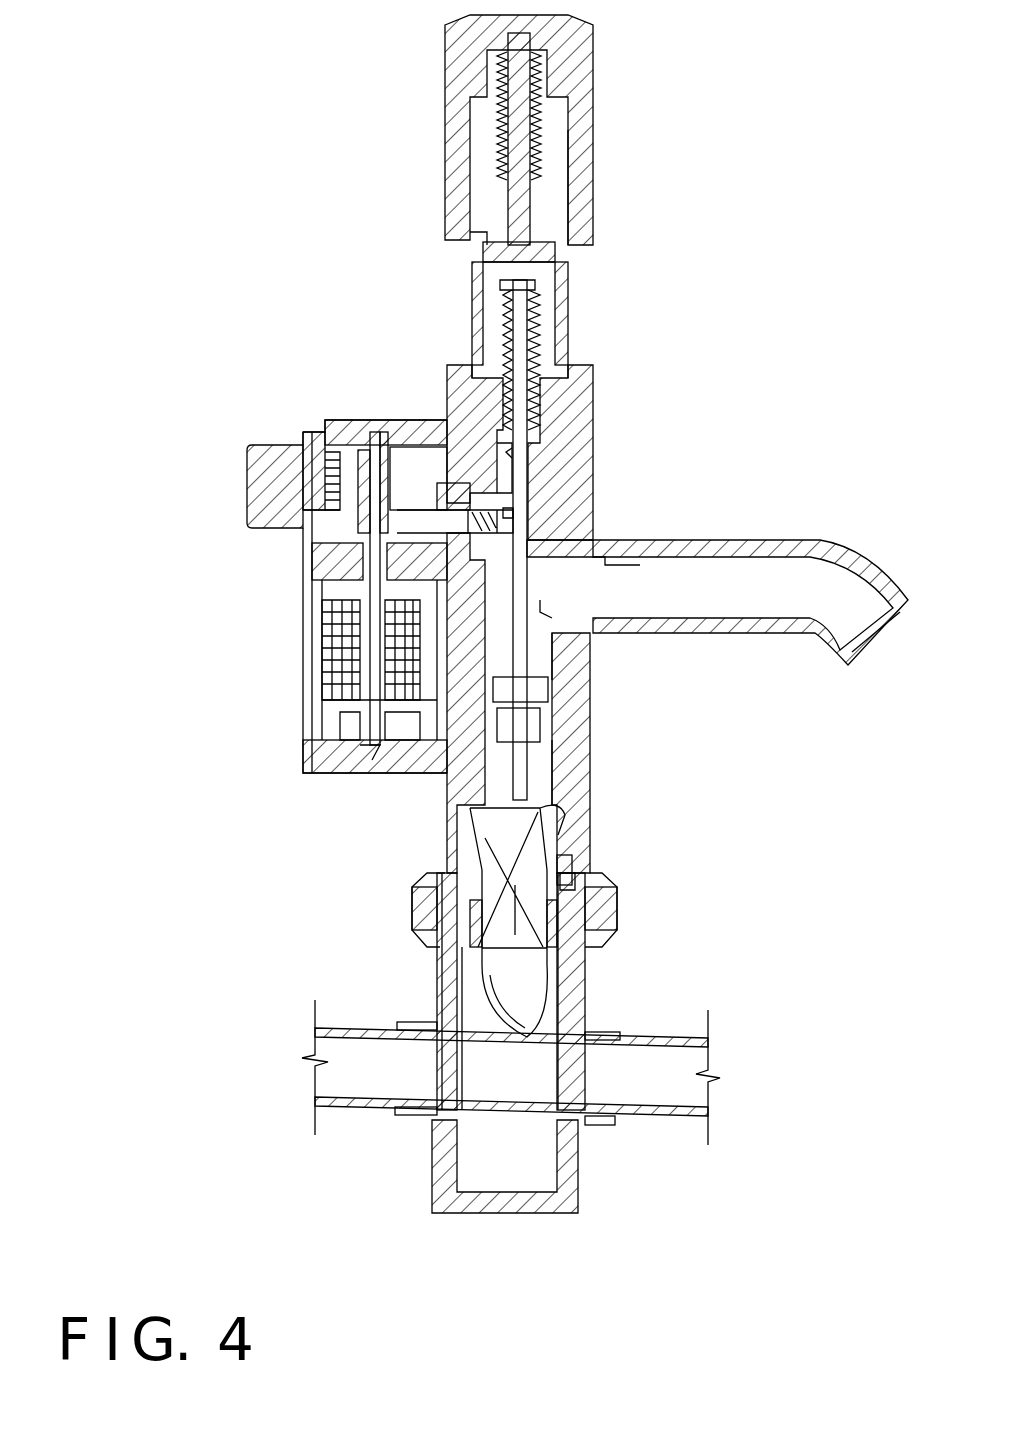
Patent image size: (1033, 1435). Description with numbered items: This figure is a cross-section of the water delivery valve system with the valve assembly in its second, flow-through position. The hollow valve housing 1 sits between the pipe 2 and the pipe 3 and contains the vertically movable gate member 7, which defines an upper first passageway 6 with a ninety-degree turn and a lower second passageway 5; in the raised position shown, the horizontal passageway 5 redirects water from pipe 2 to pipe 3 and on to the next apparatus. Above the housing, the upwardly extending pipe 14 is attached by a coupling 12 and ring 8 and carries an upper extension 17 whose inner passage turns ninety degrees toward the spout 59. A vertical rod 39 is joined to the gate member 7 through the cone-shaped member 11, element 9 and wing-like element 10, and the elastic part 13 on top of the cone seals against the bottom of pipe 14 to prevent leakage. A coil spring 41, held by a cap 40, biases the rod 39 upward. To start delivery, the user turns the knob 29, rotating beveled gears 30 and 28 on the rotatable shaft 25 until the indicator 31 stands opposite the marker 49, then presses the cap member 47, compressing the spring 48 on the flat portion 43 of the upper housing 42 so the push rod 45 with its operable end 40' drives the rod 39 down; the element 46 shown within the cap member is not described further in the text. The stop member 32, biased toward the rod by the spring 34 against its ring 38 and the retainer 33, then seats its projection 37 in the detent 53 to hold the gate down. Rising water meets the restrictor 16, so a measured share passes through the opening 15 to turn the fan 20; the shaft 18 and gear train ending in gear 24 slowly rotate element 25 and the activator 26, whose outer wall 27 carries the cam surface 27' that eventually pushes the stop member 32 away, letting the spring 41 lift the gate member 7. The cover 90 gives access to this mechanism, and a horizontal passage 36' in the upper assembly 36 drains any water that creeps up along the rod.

The valve housing 1 is at (578, 1165).
The pipe 2 is at (705, 1125).
The pipe 3 is at (355, 1110).
The second passageway 5 is at (560, 1050).
The first passageway 6 is at (552, 985).
The gate member 7 is at (445, 975).
The ring 8 is at (600, 930).
The element 9 is at (580, 900).
The wing-like element 10 is at (565, 860).
The cone-shaped member 11 is at (552, 840).
The coupling 12 is at (468, 830).
The elastic part 13 is at (552, 810).
The upwardly extending pipe 14 is at (552, 770).
The opening 15 is at (540, 725).
The restrictor 16 is at (548, 690).
The upper extension 17 is at (555, 658).
The shaft 18 is at (362, 752).
The fan 20 is at (335, 742).
The gear 24 is at (340, 610).
The rotatable shaft 25 is at (370, 570).
The activator 26 is at (380, 535).
The outer wall 27 is at (305, 554).
The cam surface 27' is at (455, 545).
The beveled gear 28 is at (410, 422).
The knob 29 is at (300, 478).
The beveled gear 30 is at (330, 432).
The indicator 31 is at (345, 418).
The stop member 32 is at (303, 510).
The retainer 33 is at (535, 455).
The spring 34 is at (528, 475).
The upper assembly 36 is at (583, 619).
The horizontal passage 36' is at (717, 587).
The projection 37 is at (600, 537).
The ring 38 is at (530, 510).
The rod 39 is at (530, 345).
The cap 40 is at (564, 262).
The operable end 40' is at (412, 230).
The coil spring 41 is at (540, 320).
The upper housing 42 is at (565, 290).
The flat portion 43 is at (570, 205).
The push rod 45 is at (513, 145).
The push stem 46 is at (565, 100).
The cap member 47 is at (445, 60).
The spring 48 is at (545, 130).
The marker 49 is at (462, 372).
The detent 53 is at (535, 462).
The spout 59 is at (870, 560).
The cover 90 is at (318, 665).